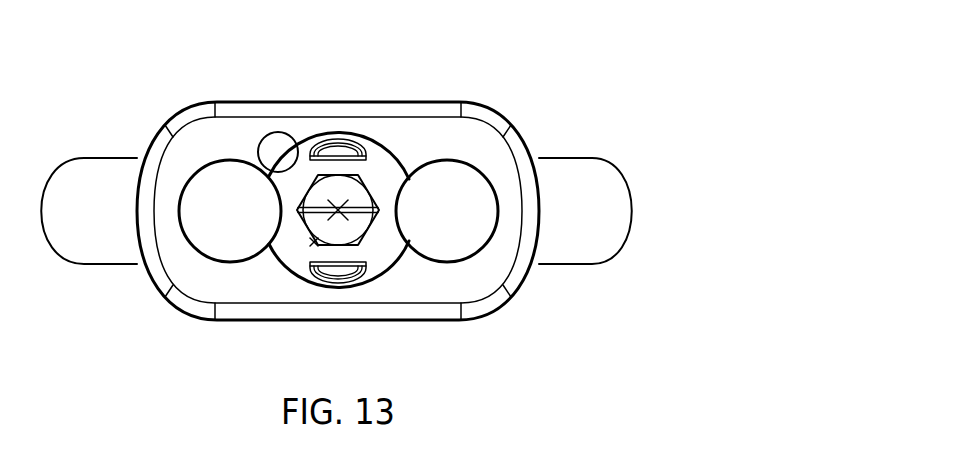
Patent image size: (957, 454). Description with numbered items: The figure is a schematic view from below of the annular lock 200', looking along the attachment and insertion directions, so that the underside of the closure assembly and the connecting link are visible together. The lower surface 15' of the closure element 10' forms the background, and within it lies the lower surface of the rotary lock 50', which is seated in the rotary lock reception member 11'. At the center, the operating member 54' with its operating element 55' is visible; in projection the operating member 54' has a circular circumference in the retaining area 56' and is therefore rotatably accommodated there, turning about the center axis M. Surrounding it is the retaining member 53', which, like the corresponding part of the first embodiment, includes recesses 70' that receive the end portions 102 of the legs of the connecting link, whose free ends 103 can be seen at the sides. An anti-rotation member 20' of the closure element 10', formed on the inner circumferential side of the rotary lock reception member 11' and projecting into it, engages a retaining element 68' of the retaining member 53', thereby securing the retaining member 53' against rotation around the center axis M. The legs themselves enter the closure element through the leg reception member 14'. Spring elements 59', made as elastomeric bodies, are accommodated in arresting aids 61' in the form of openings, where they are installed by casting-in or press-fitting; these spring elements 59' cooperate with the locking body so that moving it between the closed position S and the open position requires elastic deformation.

The closure element 10' is at (333, 190).
The rotary lock reception member 11' is at (353, 252).
The leg reception member 14' is at (344, 221).
The lower surface 15' is at (225, 330).
The anti-rotation member 20' is at (266, 110).
The rotary lock 50' is at (372, 104).
The retaining member 53' is at (424, 94).
The operating member 54' is at (303, 304).
The operating element 55' is at (260, 311).
The retaining area 56' is at (434, 318).
The spring elements 59' is at (351, 210).
The arresting aids 61' is at (357, 210).
The retaining element 68' is at (294, 95).
The recesses 70' is at (372, 234).
The end portions 102 is at (212, 236).
The free ends 103 is at (208, 180).
The annular lock 200' is at (578, 39).
The closed position S is at (585, 73).
The center axis M is at (350, 195).